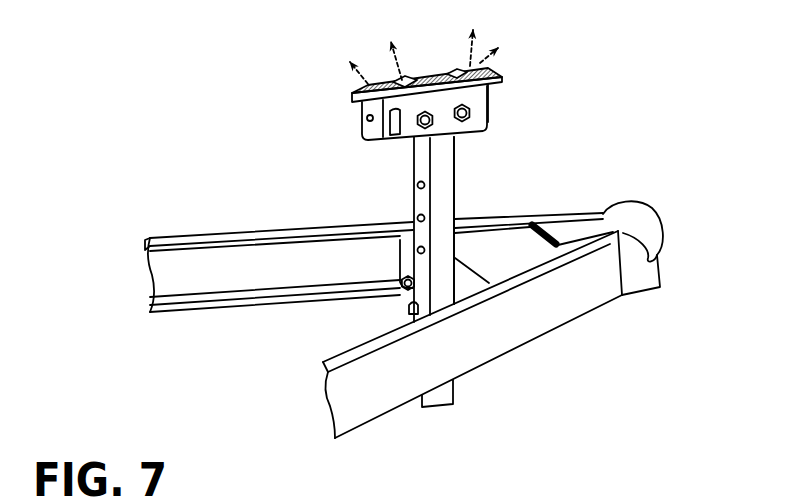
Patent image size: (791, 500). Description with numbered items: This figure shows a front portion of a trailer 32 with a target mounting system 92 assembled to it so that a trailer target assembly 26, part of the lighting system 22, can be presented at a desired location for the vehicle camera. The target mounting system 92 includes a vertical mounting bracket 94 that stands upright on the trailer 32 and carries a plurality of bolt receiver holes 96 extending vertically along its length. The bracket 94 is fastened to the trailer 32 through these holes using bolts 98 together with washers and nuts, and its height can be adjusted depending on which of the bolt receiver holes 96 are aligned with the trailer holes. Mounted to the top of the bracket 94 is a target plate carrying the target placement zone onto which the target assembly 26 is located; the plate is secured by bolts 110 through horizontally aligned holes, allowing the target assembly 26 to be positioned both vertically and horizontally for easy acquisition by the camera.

The lighting system 22 is at (421, 74).
The trailer target assembly 26 is at (499, 61).
The trailer 32 is at (204, 235).
The target mounting system 92 is at (465, 221).
The vertical mounting bracket 94 is at (440, 212).
The bolt receiver holes 96 is at (413, 185).
The bolts 98 is at (398, 290).
The bolts 110 is at (467, 116).